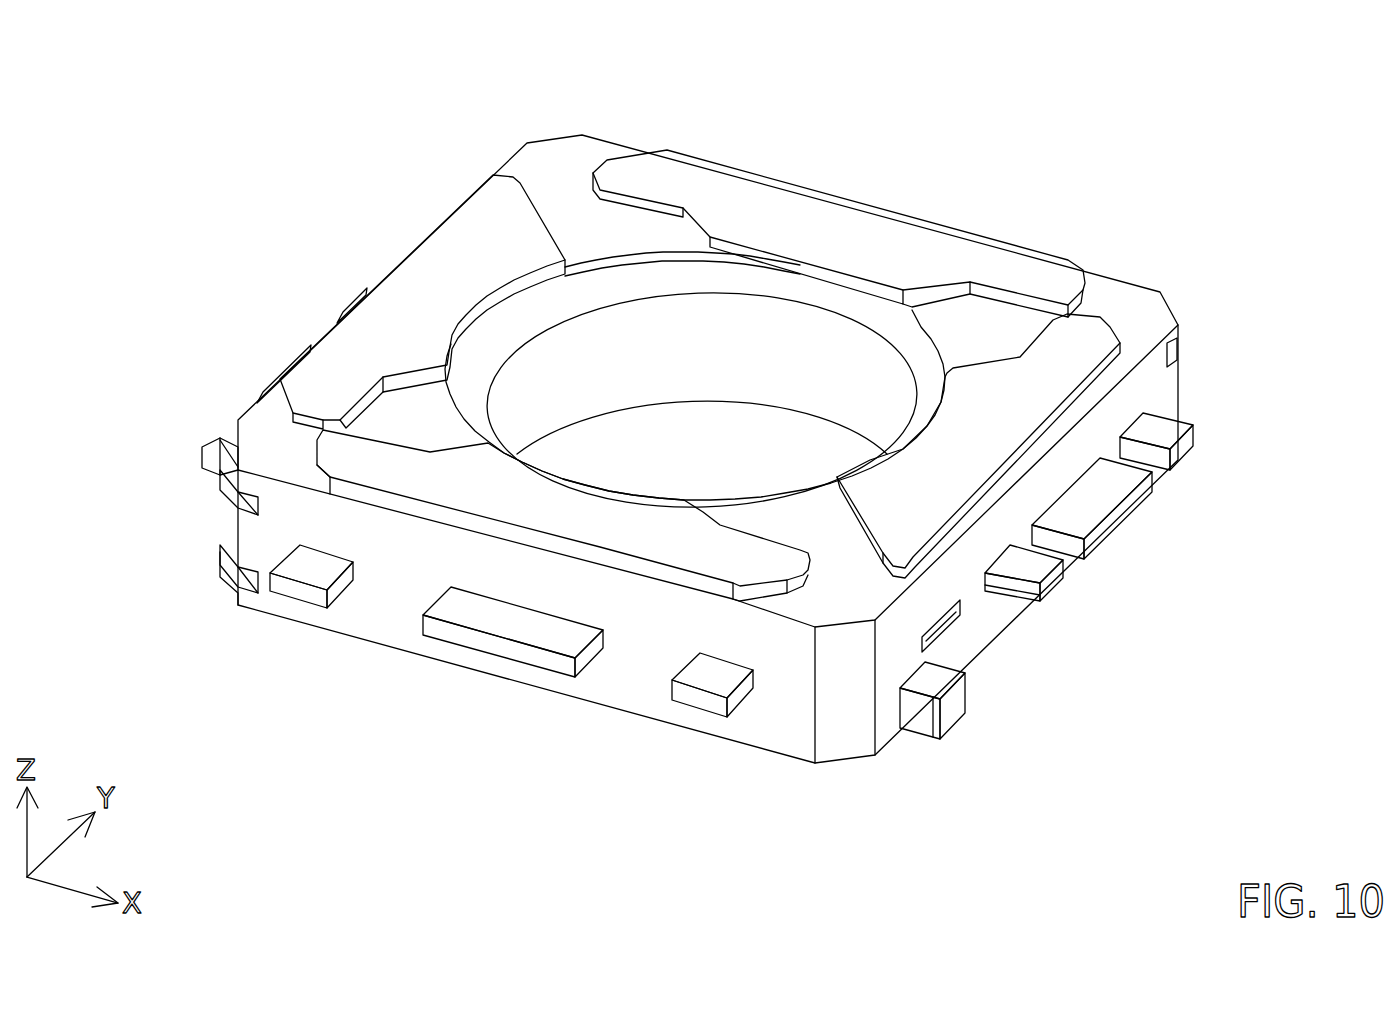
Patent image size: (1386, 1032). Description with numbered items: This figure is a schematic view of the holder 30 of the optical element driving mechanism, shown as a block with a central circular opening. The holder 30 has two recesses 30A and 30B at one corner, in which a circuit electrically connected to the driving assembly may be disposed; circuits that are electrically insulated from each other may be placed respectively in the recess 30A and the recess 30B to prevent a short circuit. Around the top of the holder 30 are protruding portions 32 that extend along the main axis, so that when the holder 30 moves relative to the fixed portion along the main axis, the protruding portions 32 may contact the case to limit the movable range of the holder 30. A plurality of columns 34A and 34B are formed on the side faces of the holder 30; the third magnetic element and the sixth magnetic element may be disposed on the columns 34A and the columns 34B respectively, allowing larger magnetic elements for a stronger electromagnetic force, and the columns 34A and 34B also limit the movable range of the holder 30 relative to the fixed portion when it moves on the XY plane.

The holder 30 is at (306, 63).
The protruding portions 32 is at (452, 253).
The recess 30A is at (238, 498).
The recess 30B is at (238, 575).
The columns 34A is at (300, 590).
The columns 34B is at (1160, 457).